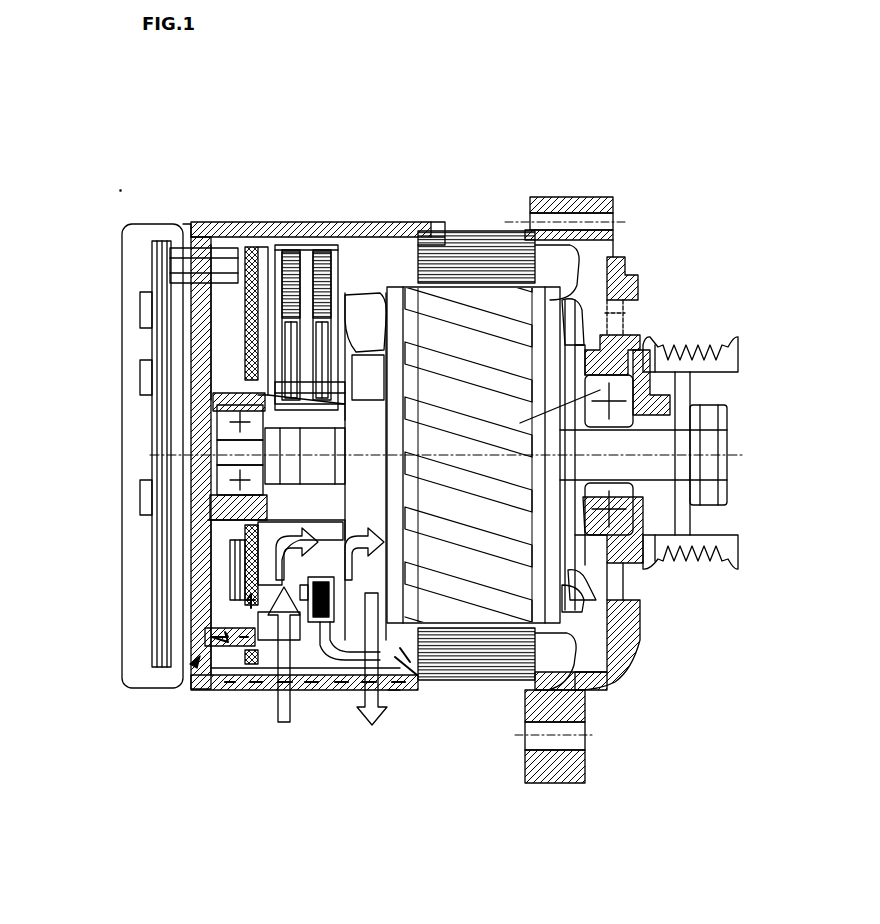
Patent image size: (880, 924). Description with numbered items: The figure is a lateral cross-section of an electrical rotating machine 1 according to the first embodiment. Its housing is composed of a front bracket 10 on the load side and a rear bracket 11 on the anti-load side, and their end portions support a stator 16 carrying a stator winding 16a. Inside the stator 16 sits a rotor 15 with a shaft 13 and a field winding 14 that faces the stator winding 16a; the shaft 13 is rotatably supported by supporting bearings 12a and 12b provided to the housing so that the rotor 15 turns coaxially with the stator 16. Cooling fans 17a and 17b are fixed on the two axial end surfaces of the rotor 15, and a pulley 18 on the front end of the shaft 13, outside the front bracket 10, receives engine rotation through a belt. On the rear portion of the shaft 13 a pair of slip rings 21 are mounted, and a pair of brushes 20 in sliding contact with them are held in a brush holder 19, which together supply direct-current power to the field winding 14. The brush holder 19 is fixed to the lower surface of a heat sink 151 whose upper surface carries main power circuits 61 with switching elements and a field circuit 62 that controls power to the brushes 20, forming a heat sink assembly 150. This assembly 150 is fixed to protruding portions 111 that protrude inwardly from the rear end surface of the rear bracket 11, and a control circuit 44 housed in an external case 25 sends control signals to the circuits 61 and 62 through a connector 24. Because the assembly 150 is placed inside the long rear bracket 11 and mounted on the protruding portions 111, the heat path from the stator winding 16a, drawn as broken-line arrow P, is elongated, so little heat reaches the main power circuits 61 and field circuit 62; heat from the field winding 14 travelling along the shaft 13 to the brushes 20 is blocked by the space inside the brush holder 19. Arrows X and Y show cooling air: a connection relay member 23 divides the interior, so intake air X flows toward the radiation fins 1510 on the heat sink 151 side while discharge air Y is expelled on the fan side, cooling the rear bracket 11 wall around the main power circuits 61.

The electrical rotating machine 1 is at (506, 188).
The front bracket 10 is at (570, 757).
The rear bracket 11 is at (213, 683).
The protruding portions 111 is at (197, 663).
The supporting bearing 12a is at (287, 420).
The supporting bearing 12b is at (643, 517).
The shaft 13 is at (643, 440).
The field winding 14 is at (600, 343).
The rotor 15 is at (427, 303).
The stator 16 is at (453, 657).
The stator winding 16a is at (422, 676).
The cooling fan 17a is at (362, 312).
The cooling fan 17b is at (598, 598).
The pulley 18 is at (683, 515).
The brush holder 19 is at (285, 353).
The brushes 20 is at (233, 310).
The slip rings 21 is at (265, 385).
The connection relay member 23 is at (317, 658).
The connector 24 is at (193, 267).
The external case 25 is at (140, 628).
The control circuit 44 is at (157, 472).
The main power circuits 61 is at (267, 578).
The field circuit 62 is at (290, 352).
The heat sink assembly 150 is at (267, 643).
The heat sink 151 is at (245, 598).
The radiation fins 1510 is at (262, 585).
The intake air X is at (285, 725).
The discharge air Y is at (372, 713).
The heat transmission path P is at (388, 695).